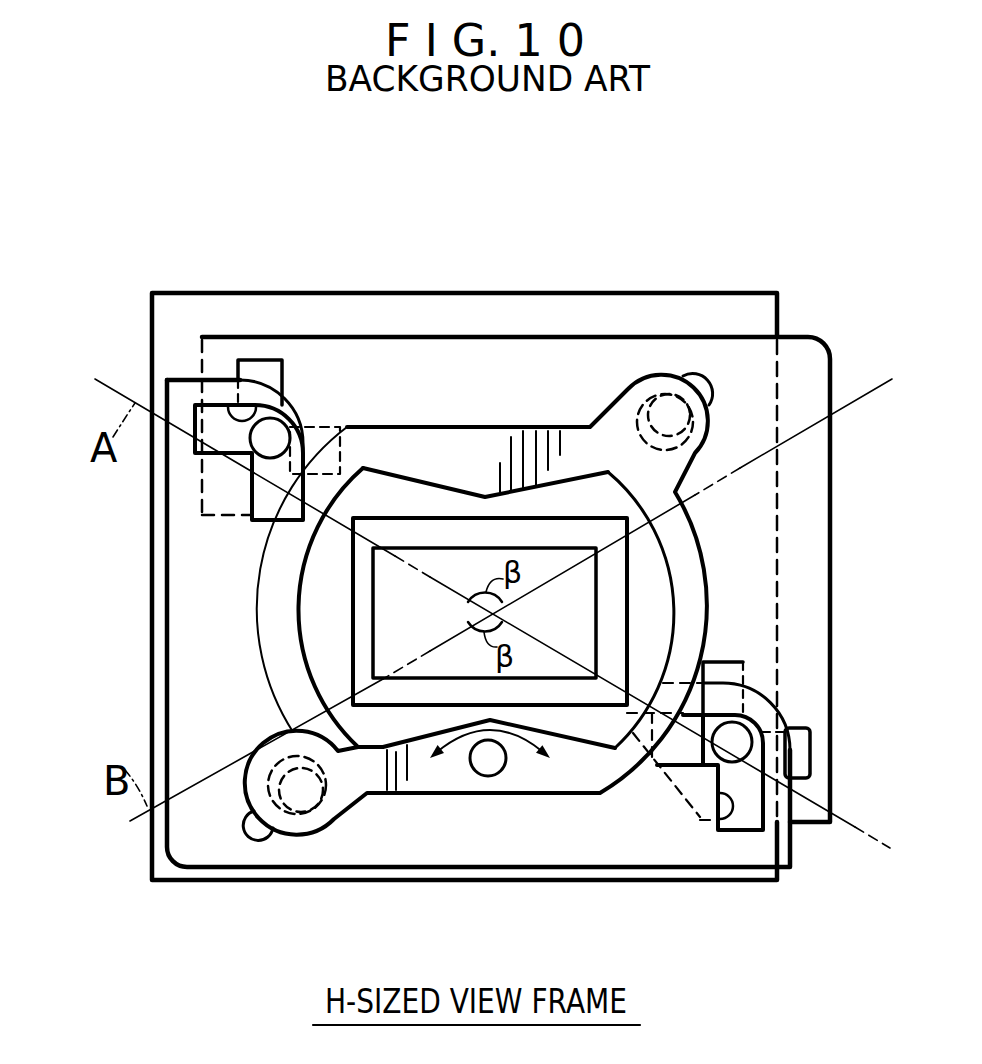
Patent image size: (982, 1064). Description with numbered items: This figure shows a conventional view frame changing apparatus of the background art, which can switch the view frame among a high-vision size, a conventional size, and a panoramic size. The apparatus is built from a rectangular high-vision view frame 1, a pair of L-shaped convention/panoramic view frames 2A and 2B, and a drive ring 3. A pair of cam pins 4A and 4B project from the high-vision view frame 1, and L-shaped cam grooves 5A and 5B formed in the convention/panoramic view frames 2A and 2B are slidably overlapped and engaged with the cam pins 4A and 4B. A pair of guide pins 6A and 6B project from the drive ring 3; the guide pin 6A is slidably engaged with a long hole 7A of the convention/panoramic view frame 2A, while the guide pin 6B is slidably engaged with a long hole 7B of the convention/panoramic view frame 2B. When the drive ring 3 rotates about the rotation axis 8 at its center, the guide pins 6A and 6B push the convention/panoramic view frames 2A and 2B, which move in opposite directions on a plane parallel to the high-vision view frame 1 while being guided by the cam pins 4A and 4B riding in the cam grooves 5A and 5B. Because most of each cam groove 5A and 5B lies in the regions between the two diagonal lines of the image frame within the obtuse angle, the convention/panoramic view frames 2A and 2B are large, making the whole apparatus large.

The high-vision view frame 1 is at (470, 293).
The convention/panoramic view frame 2A is at (529, 858).
The convention/panoramic view frame 2B is at (500, 345).
The drive ring 3 is at (453, 438).
The cam pin 4A is at (290, 403).
The cam pin 4B is at (740, 740).
The cam groove 5A is at (238, 410).
The cam groove 5B is at (318, 420).
The guide pin 6A is at (300, 823).
The guide pin 6B is at (630, 412).
The long hole 7A is at (262, 836).
The long hole 7B is at (682, 374).
The rotation axis 8 is at (488, 766).